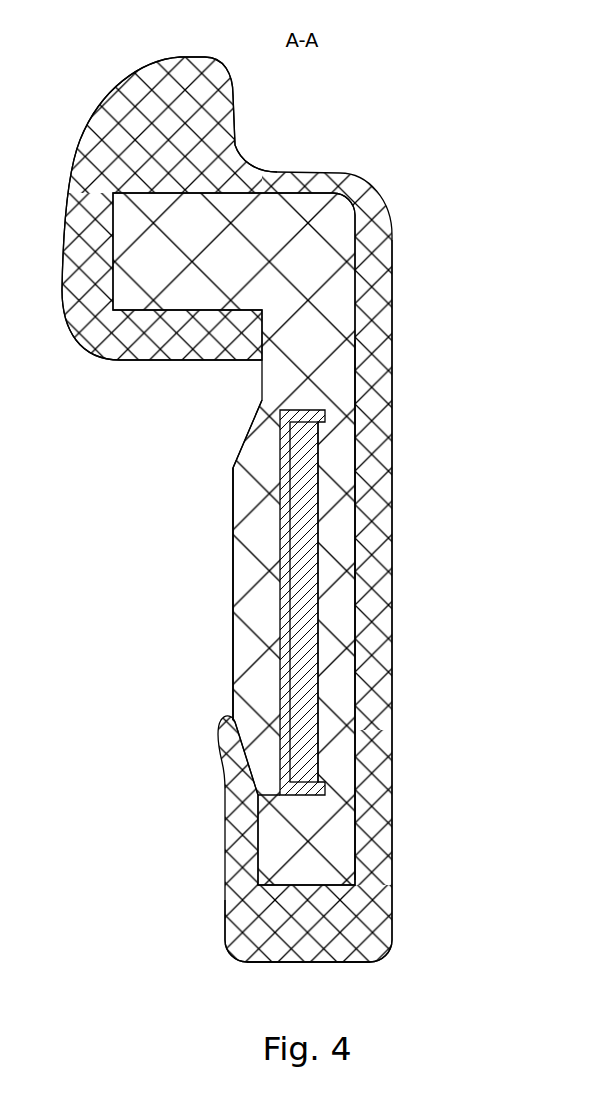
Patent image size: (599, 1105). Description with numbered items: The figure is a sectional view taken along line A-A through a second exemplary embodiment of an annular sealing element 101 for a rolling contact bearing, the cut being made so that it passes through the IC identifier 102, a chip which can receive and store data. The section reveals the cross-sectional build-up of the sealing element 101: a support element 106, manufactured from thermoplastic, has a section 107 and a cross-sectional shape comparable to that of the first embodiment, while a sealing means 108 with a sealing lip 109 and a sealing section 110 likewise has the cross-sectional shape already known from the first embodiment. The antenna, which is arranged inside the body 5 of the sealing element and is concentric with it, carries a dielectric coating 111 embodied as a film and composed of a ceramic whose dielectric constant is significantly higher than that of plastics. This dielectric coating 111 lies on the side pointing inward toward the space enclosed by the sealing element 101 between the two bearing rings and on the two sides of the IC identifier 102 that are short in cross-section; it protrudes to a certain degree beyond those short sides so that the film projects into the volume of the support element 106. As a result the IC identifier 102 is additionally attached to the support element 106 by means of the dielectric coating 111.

The sealing element 101 is at (408, 218).
The IC identifier 102 is at (308, 480).
The body 5 is at (373, 572).
The support element 106 is at (350, 338).
The section 107 is at (233, 633).
The sealing means 108 is at (338, 940).
The sealing lip 109 is at (207, 117).
The sealing section 110 is at (317, 962).
The dielectric coating 111 is at (277, 547).